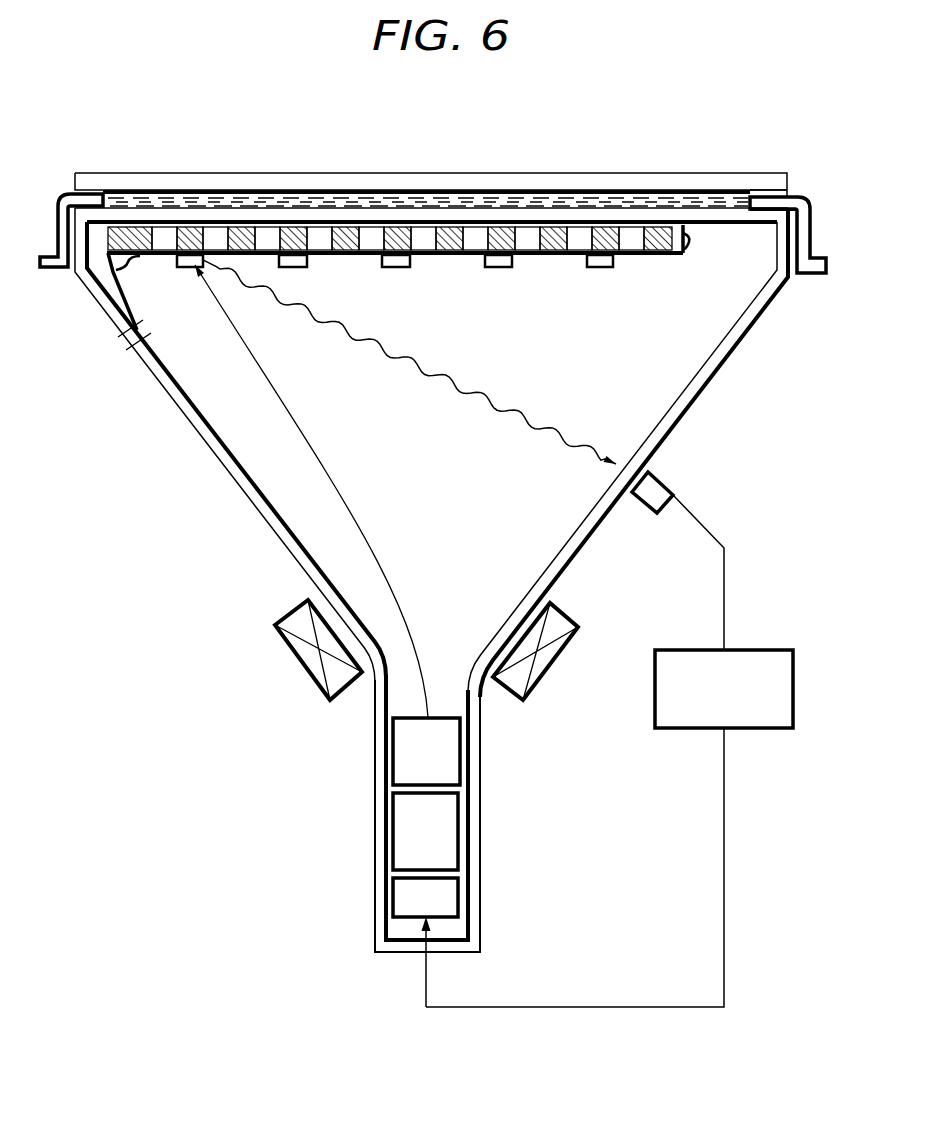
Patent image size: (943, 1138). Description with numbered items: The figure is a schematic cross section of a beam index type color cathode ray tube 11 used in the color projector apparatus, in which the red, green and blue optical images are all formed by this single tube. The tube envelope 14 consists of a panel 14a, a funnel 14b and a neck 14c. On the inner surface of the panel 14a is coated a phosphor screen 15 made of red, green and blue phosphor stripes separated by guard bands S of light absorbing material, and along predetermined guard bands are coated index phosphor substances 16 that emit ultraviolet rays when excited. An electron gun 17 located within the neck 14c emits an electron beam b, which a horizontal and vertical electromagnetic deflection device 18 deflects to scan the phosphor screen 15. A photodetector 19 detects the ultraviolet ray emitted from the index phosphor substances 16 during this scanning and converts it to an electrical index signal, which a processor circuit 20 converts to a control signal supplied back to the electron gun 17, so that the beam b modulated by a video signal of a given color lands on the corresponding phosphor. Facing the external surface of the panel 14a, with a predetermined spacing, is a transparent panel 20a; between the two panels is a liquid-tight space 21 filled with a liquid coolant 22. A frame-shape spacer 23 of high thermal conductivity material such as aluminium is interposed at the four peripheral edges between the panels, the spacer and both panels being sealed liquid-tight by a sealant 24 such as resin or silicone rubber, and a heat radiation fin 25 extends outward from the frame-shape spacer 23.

The color cathode ray tube 11 is at (431, 536).
The tube envelope 14 is at (431, 536).
The panel 14a is at (418, 221).
The funnel 14b is at (664, 434).
The neck 14c is at (480, 880).
The phosphor screen 15 is at (427, 256).
The index phosphor substances 16 is at (203, 260).
The electron gun 17 is at (397, 838).
The horizontal and vertical electromagnetic deflection device 18 is at (544, 673).
The photodetector 19 is at (648, 500).
The processor circuit 20 is at (775, 729).
The transparent panel 20a is at (338, 189).
The liquid-tight space 21 is at (562, 193).
The liquid coolant 22 is at (484, 207).
The frame-shape spacer 23 is at (776, 198).
The sealant 24 is at (763, 190).
The heat radiation fin 25 is at (805, 225).
The guard bands S is at (545, 256).
The electron beam b is at (390, 572).